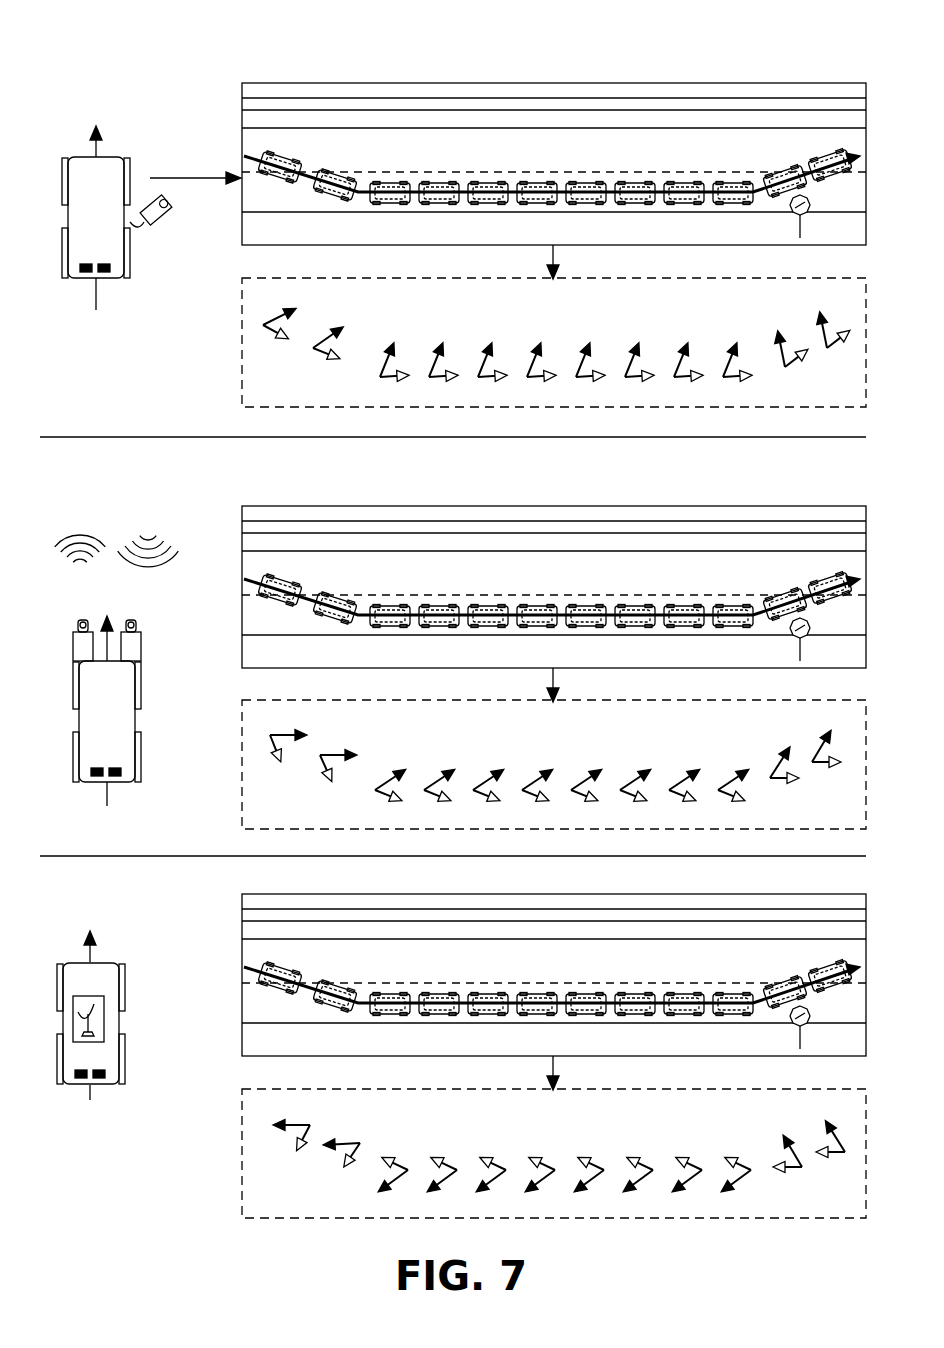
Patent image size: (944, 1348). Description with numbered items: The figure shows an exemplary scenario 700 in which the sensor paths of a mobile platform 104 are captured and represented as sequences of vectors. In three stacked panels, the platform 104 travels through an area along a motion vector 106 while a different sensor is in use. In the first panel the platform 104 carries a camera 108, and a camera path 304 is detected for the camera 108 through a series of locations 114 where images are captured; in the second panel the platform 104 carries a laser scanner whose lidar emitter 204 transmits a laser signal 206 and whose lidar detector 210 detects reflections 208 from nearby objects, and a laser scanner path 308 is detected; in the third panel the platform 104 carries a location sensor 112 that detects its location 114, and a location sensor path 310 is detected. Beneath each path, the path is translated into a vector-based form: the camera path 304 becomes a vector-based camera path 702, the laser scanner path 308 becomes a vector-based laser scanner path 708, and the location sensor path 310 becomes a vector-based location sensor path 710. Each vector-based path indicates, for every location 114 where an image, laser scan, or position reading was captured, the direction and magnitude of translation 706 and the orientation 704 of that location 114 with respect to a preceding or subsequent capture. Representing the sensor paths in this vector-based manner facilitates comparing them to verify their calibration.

The exemplary scenario 700 is at (806, 38).
The platform 104 is at (110, 157).
The motion vector 106 is at (99, 128).
The camera 108 is at (170, 226).
The location sensor 112 is at (92, 996).
The location 114 is at (725, 1040).
The lidar emitter 204 is at (83, 620).
The laser signal 206 is at (80, 537).
The reflections 208 is at (150, 545).
The lidar detector 210 is at (134, 622).
The camera path 304 is at (305, 178).
The laser scanner path 308 is at (305, 601).
The location sensor path 310 is at (305, 989).
The vector-based camera path 702 is at (242, 296).
The orientation 704 is at (335, 328).
The translation 706 is at (335, 358).
The vector-based laser scanner path 708 is at (242, 718).
The vector-based location sensor path 710 is at (242, 1105).